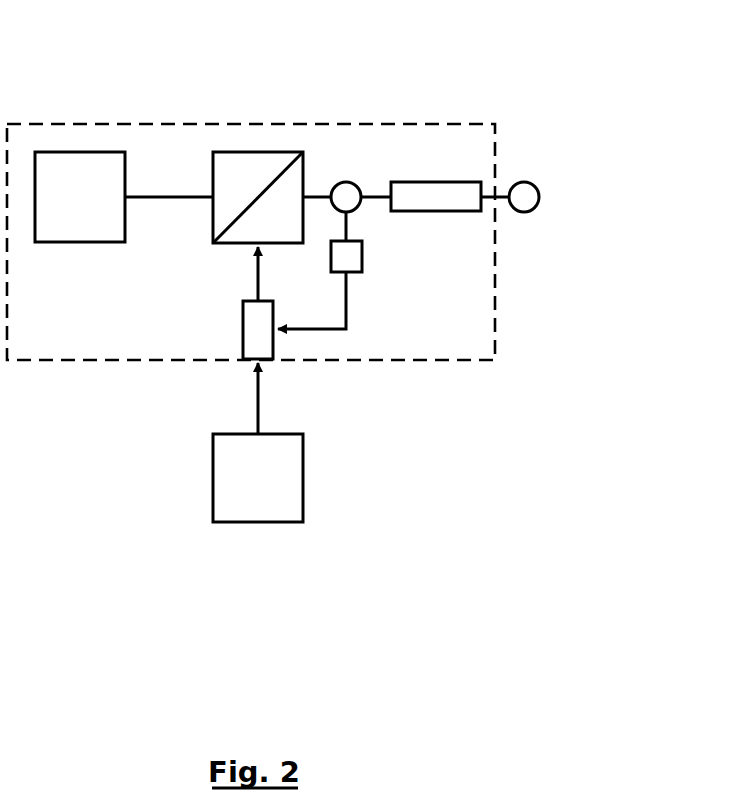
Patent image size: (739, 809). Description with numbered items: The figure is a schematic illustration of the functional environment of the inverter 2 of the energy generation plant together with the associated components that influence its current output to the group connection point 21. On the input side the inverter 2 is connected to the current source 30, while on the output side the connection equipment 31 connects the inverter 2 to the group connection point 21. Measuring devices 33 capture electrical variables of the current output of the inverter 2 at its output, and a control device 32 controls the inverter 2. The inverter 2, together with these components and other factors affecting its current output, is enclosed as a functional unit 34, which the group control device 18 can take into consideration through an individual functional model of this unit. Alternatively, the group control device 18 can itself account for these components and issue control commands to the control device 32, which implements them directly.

The inverter 2 is at (306, 148).
The group control device 18 is at (303, 472).
The group connection point 21 is at (538, 184).
The current source 30 is at (78, 152).
The connection equipment 31 is at (438, 182).
The control device 32 is at (243, 329).
The measuring devices 33 is at (364, 276).
The functional unit 34 is at (390, 124).